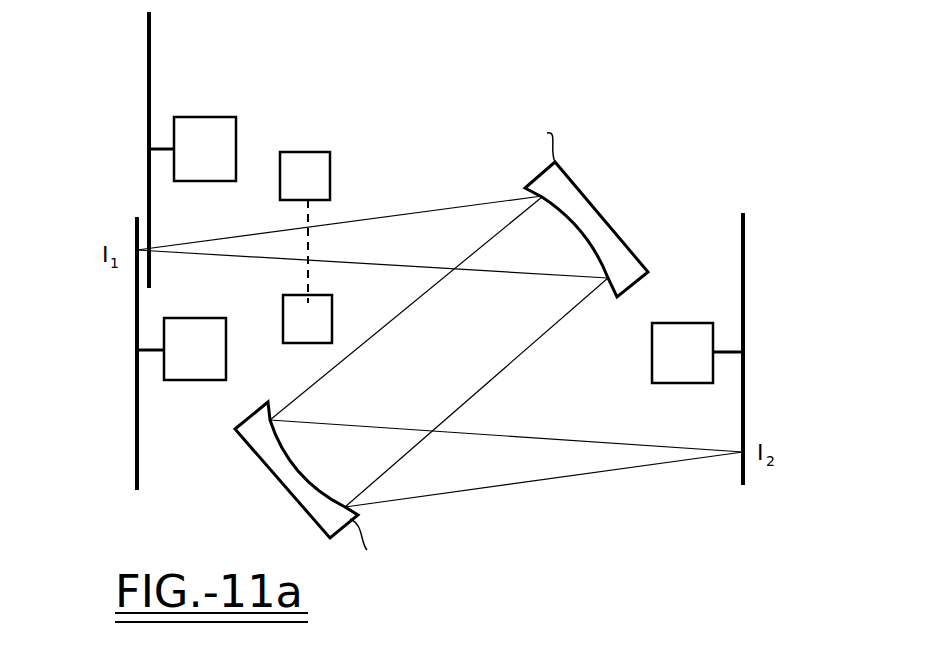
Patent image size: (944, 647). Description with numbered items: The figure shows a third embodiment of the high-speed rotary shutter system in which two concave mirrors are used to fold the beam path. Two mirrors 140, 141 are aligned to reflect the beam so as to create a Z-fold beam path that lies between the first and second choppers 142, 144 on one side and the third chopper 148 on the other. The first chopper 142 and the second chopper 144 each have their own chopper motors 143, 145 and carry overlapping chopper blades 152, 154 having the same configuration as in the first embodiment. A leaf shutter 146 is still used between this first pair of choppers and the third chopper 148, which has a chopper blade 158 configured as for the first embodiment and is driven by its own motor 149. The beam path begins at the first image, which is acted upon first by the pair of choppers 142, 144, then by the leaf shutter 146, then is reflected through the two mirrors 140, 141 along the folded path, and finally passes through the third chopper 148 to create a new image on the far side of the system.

The concave mirror 140 is at (593, 200).
The concave mirror 141 is at (280, 483).
The first chopper 142 is at (124, 361).
The chopper motor 143 is at (204, 380).
The second chopper 144 is at (134, 134).
The chopper motor 145 is at (207, 117).
The leaf shutter 146 is at (310, 152).
The third chopper 148 is at (764, 363).
The chopper motor 149 is at (677, 383).
The chopper blade 152 is at (136, 458).
The chopper blade 154 is at (147, 33).
The chopper blade 158 is at (744, 243).